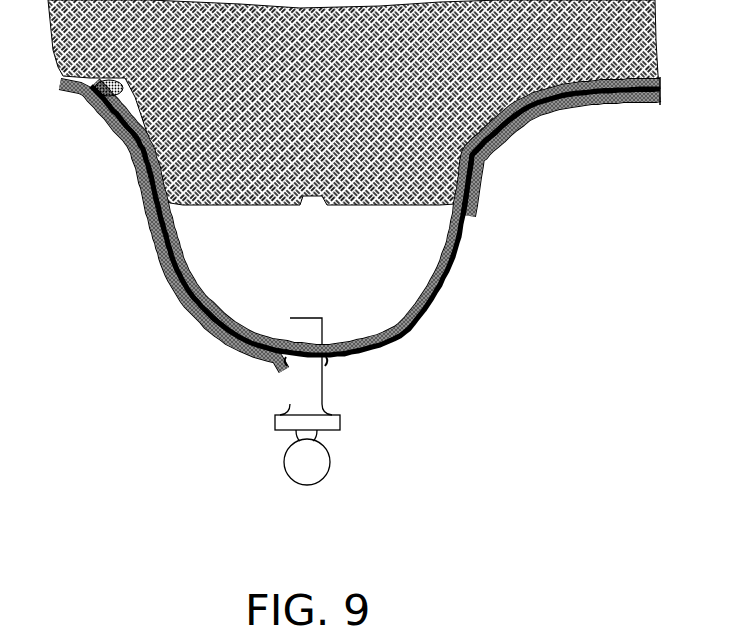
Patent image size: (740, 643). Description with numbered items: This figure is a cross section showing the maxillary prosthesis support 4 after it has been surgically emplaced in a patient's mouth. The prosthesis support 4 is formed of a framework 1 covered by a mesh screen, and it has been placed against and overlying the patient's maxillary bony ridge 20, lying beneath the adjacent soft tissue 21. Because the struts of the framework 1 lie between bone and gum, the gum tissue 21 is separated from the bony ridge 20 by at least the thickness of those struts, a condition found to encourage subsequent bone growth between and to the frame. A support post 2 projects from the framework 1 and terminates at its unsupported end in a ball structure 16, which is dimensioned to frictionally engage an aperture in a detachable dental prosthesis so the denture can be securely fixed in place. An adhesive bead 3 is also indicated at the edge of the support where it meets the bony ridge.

The framework 1 is at (189, 270).
The support post 2 is at (295, 388).
The adhesive bead 3 is at (98, 112).
The prosthesis support structure 4 is at (355, 225).
The ball structure 16 is at (320, 462).
The maxillary bony ridge 20 is at (485, 160).
The soft tissue 21 is at (137, 167).